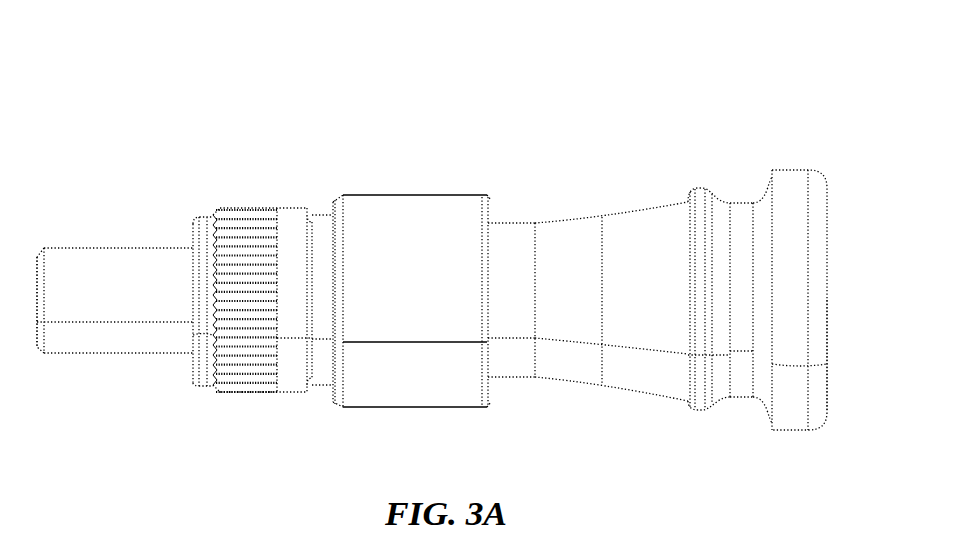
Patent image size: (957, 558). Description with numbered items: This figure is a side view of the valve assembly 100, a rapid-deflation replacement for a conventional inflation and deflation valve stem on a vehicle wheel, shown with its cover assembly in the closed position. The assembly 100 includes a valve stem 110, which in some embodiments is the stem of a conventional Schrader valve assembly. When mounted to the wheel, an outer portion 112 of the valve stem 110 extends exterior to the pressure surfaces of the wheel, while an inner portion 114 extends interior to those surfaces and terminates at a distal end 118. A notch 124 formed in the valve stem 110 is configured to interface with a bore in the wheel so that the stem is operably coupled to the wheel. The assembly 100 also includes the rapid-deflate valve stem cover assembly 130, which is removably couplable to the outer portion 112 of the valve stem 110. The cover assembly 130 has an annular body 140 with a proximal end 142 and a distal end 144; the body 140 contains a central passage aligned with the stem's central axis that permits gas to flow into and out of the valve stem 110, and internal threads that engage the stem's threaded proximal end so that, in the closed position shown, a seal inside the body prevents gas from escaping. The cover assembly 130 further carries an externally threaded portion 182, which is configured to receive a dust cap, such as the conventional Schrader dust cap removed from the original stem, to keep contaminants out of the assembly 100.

The valve assembly 100 is at (605, 75).
The valve stem 110 is at (665, 209).
The outer portion 112 is at (560, 228).
The inner portion 114 is at (795, 187).
The distal end 118 is at (827, 312).
The notch 124 is at (742, 205).
The rapid-deflate valve stem cover assembly 130 is at (285, 208).
The annular body 140 is at (390, 212).
The proximal end 142 is at (37, 273).
The distal end 144 is at (488, 212).
The externally threaded portion 182 is at (107, 248).